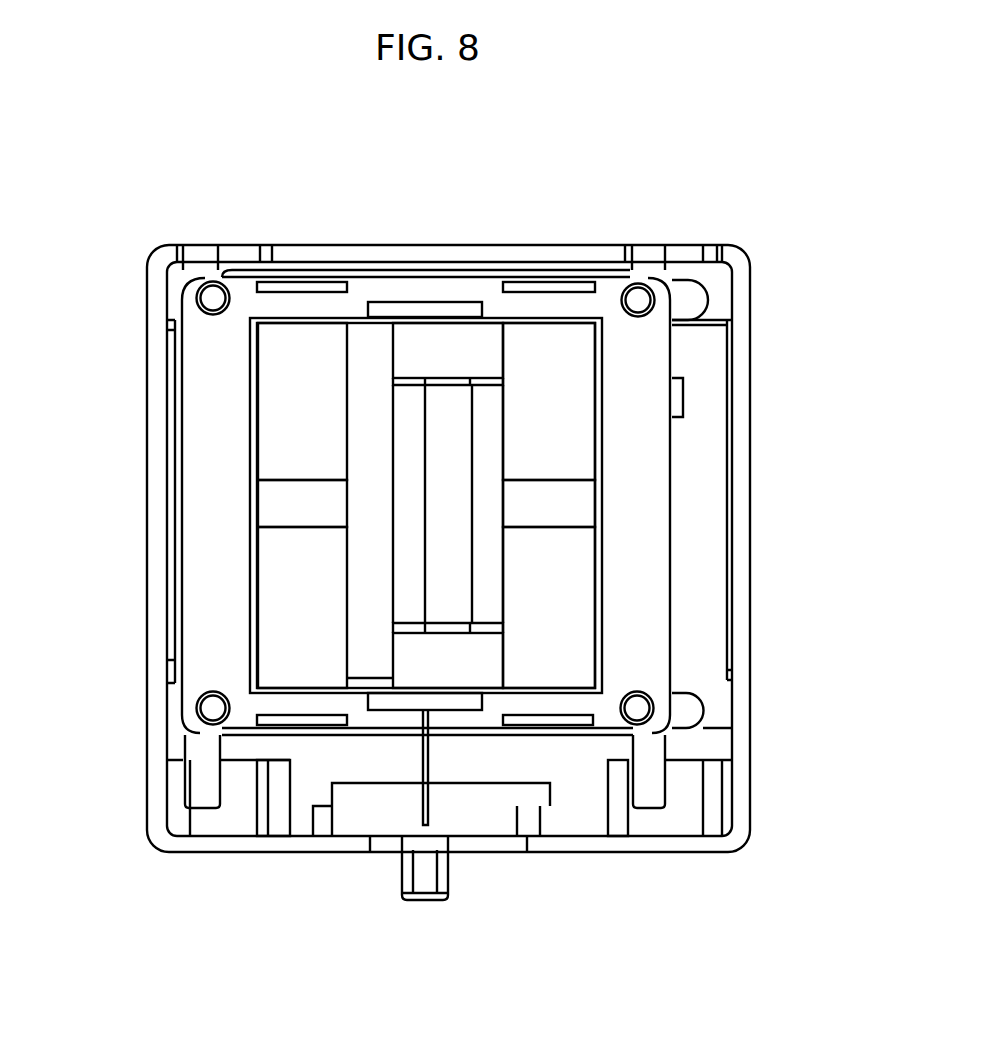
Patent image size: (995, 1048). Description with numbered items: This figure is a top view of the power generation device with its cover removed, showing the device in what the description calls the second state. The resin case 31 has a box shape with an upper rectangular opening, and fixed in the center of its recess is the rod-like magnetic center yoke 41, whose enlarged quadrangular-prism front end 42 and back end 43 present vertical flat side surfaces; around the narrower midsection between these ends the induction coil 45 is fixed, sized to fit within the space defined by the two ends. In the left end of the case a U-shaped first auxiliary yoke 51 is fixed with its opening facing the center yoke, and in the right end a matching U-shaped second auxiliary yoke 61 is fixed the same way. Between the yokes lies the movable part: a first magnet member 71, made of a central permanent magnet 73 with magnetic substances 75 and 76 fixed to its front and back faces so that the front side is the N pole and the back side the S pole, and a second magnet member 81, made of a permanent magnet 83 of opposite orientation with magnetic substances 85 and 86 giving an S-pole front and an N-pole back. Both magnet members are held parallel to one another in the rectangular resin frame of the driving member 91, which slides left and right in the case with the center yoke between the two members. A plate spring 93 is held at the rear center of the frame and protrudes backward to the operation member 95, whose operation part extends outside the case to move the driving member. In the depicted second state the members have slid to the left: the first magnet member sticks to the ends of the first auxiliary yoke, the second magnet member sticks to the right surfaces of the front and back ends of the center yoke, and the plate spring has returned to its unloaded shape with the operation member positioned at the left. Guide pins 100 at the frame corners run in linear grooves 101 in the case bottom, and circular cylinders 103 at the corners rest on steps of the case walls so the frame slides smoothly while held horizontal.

The case 31 is at (697, 842).
The center yoke 41 is at (462, 572).
The front end 42 is at (418, 335).
The back end 43 is at (453, 668).
The induction coil 45 is at (453, 435).
The first auxiliary yoke 51 is at (175, 390).
The second auxiliary yoke 61 is at (708, 400).
The first magnet member 71 is at (190, 505).
The permanent magnet 73 is at (268, 505).
The magnetic substance 75 is at (268, 437).
The magnetic substance 76 is at (268, 568).
The second magnet member 81 is at (688, 505).
The permanent magnet 83 is at (577, 508).
The magnetic substance 85 is at (577, 440).
The magnetic substance 86 is at (570, 572).
The driving member 91 is at (305, 303).
The plate spring 93 is at (425, 762).
The operation member 95 is at (432, 877).
The guide pin 100 is at (637, 712).
The linear groove 101 is at (693, 705).
The circular cylinder 103 is at (645, 268).